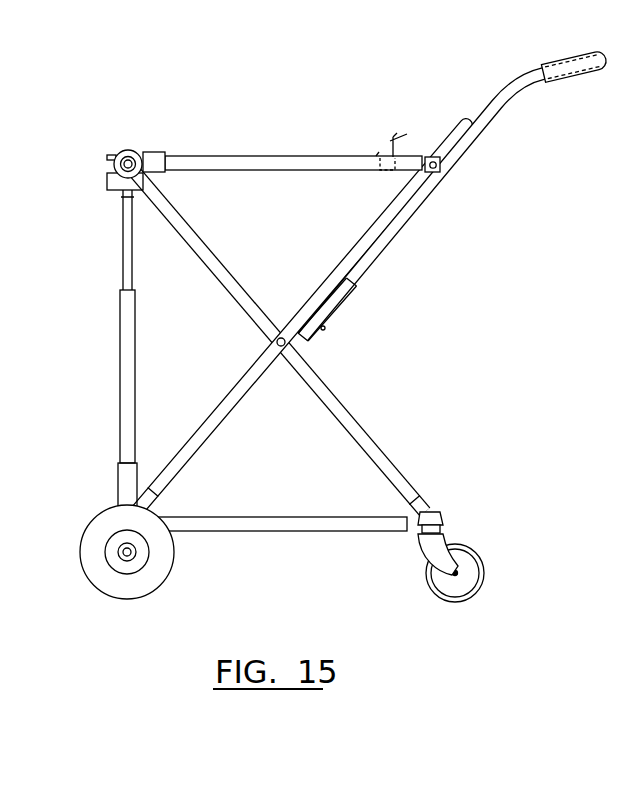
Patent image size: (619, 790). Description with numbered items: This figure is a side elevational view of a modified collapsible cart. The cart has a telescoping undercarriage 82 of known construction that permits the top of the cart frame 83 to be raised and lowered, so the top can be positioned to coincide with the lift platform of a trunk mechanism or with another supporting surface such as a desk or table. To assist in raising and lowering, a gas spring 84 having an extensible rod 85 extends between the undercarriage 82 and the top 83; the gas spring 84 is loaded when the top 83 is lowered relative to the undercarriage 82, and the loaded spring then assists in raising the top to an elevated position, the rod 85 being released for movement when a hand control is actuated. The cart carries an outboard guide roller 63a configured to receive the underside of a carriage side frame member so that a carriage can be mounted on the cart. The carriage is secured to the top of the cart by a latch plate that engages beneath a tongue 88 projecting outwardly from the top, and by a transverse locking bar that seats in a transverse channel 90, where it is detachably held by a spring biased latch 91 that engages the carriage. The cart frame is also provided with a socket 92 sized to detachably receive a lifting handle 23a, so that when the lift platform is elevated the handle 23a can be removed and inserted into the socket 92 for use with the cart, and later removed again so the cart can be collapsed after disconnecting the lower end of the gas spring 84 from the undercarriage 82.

The handle 23a is at (414, 214).
The outboard guide roller 63a is at (130, 153).
The telescoping undercarriage 82 is at (270, 530).
The top of cart frame 83 is at (215, 160).
The gas spring 84 is at (120, 394).
The extensible rod 85 is at (123, 262).
The tongue 88 is at (113, 157).
The transverse channel 90 is at (382, 166).
The spring biased latch 91 is at (396, 133).
The socket 92 is at (341, 300).